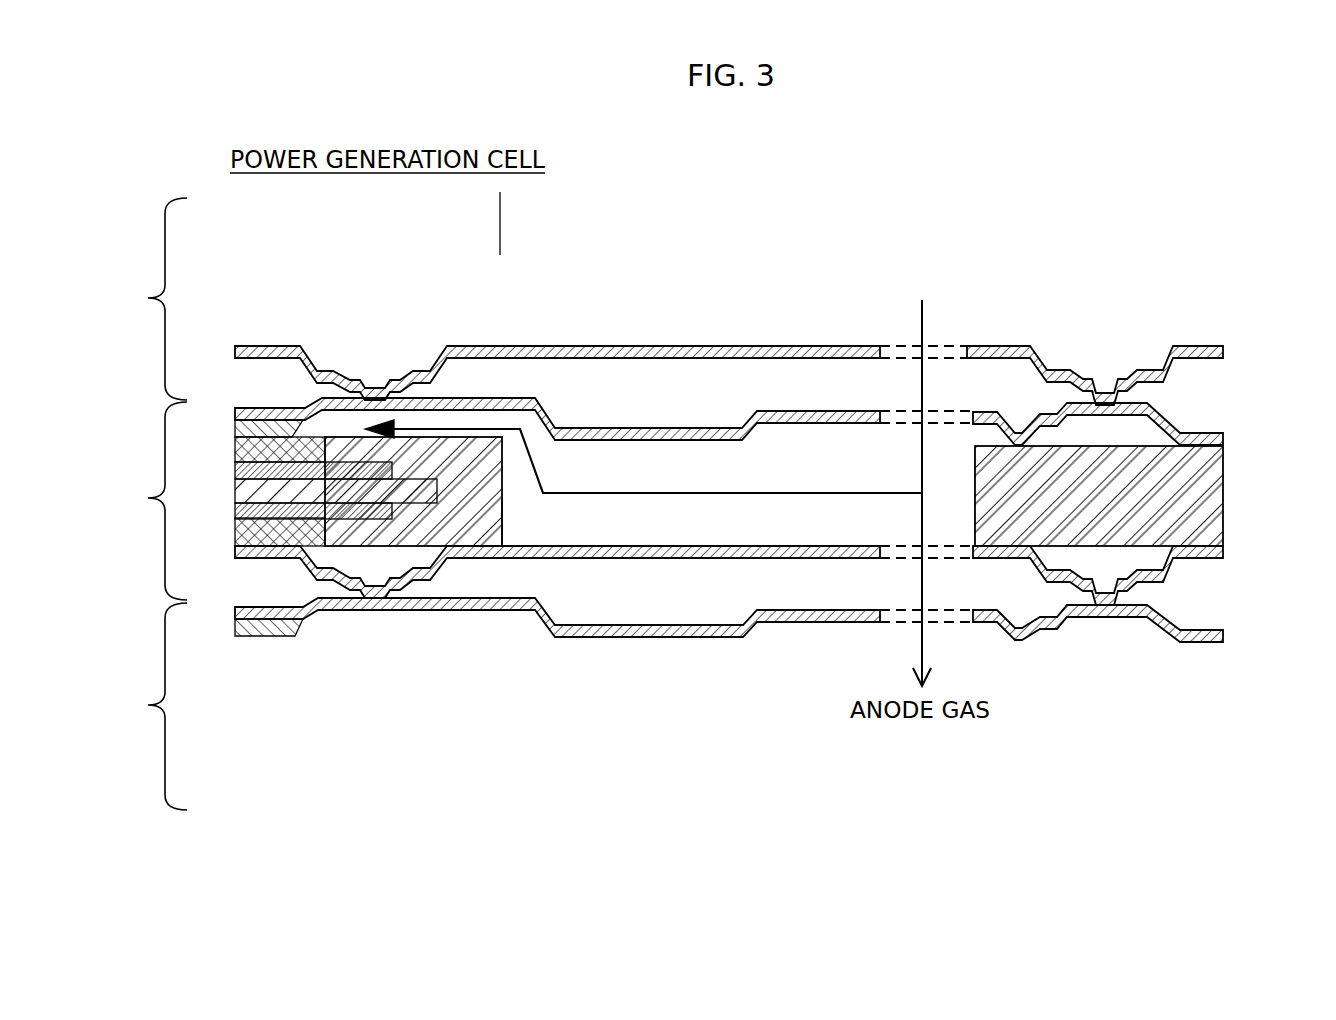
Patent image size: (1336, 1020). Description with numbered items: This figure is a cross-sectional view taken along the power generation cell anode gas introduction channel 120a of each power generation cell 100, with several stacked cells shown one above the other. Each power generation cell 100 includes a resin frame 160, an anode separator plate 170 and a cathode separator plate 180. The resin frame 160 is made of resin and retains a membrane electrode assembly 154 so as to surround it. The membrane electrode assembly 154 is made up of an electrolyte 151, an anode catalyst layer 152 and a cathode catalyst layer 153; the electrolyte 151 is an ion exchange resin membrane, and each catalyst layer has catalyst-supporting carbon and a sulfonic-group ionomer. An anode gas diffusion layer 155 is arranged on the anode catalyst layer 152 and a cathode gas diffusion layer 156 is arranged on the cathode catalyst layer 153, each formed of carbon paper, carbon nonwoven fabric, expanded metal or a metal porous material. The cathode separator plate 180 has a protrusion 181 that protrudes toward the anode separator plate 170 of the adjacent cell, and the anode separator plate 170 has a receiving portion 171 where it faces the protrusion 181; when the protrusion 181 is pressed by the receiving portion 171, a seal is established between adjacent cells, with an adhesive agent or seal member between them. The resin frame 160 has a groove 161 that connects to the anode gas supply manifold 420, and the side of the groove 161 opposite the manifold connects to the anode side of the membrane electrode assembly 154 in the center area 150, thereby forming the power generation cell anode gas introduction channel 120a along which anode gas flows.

The power generation cell 100 is at (145, 504).
The center area 150 is at (500, 216).
The electrolyte 151 is at (372, 492).
The anode catalyst layer 152 is at (390, 512).
The cathode catalyst layer 153 is at (352, 474).
The membrane electrode assembly 154 is at (371, 634).
The anode gas diffusion layer 155 is at (259, 440).
The cathode gas diffusion layer 156 is at (260, 530).
The resin frame 160 is at (1160, 520).
The groove 161 is at (502, 522).
The anode separator plate 170 is at (1222, 432).
The receiving portion 171 is at (460, 385).
The cathode separator plate 180 is at (1222, 349).
The protrusion 181 is at (376, 372).
The anode gas supply manifold 420 is at (957, 340).
The power generation cell anode gas introduction channel 120a is at (690, 484).